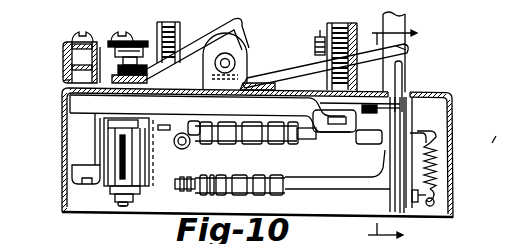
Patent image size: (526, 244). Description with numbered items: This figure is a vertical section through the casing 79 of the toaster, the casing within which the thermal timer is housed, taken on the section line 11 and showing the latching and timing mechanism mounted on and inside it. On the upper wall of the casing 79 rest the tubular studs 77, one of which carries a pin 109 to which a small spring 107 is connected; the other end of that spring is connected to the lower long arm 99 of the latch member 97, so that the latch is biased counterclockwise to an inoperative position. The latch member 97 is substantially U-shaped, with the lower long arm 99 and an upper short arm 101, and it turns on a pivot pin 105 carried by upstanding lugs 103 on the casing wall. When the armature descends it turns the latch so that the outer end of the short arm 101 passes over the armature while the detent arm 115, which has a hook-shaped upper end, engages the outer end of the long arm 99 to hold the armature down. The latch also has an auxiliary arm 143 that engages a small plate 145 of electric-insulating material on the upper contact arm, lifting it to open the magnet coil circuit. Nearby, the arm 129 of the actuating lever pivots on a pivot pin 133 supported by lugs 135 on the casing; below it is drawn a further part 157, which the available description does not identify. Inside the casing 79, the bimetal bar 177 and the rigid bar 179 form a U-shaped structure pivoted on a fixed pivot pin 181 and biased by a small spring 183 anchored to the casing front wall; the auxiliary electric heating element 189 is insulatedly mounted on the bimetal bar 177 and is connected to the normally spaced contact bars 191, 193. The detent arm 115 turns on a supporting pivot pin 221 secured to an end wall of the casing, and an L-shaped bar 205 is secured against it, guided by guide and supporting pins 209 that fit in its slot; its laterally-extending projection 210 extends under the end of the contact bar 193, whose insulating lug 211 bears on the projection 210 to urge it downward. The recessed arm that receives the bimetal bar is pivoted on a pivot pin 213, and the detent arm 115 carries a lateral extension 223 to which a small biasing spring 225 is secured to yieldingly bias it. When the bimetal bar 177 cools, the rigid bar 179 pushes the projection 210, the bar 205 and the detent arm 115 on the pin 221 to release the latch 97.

The section line 11- 11 is at (404, 134).
The tubular studs 77 is at (356, 28).
The casing 79 is at (64, 148).
The latch member 97 is at (297, 58).
The lower long arm 99 is at (410, 50).
The upper short arm 101 is at (231, 22).
The upstanding lugs 103 is at (233, 49).
The pivot pin 105 is at (205, 90).
The small spring 107 is at (314, 43).
The pin 109 is at (318, 32).
The detent arm 115 is at (403, 70).
The arm 129 is at (128, 207).
The pivot pin 133 is at (60, 58).
The lugs 135 is at (65, 80).
The auxiliary arm 143 is at (172, 96).
The small plate 145 is at (142, 38).
The solenoid core 157 is at (110, 225).
The bimetal bar 177 is at (317, 188).
The rigid bar 179 is at (213, 192).
The fixed pivot pin 181 is at (110, 168).
The small spring 183 is at (190, 148).
The auxiliary electric heating element 189 is at (233, 190).
The contact bar 191 is at (308, 142).
The contact bar 193 is at (303, 105).
The bar 205 is at (383, 181).
The guide and supporting pins 209 is at (384, 147).
The laterally-extending projection 210 is at (354, 141).
The lug 211 is at (380, 109).
The pivot pin 213 is at (509, 136).
The supporting pivot pin 221 is at (382, 205).
The lateral extension 223 is at (434, 210).
The small biasing spring 225 is at (436, 170).